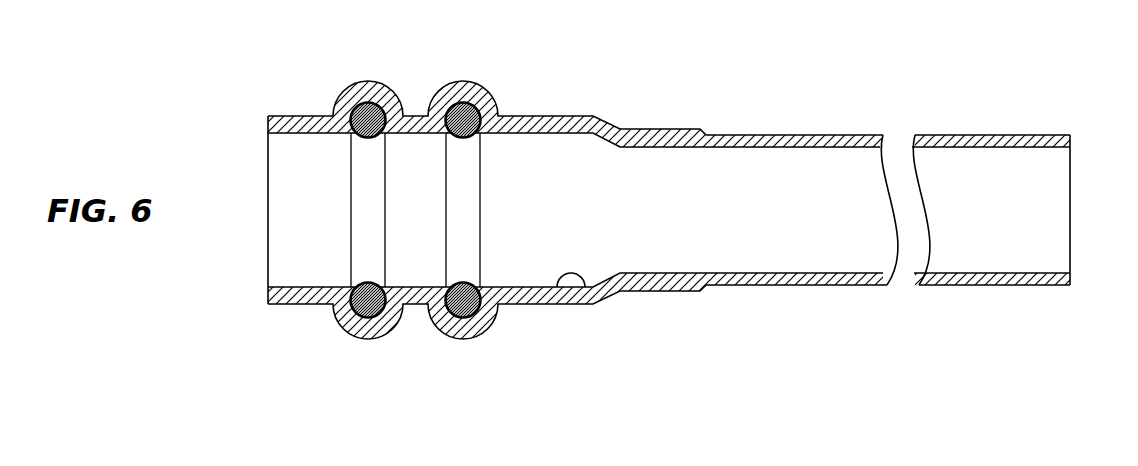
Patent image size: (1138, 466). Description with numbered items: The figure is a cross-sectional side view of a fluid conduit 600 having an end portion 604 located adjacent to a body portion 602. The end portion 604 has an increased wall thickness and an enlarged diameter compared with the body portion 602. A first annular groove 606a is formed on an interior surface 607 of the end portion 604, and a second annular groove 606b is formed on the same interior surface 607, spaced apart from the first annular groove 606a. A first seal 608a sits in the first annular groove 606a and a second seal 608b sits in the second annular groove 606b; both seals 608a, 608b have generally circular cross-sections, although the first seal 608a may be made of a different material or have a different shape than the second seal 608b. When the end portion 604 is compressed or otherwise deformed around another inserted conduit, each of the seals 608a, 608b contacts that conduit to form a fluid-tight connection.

The fluid conduit 600 is at (677, 199).
The body portion 602 is at (875, 310).
The end portion 604 is at (312, 333).
The first annular groove 606a is at (388, 305).
The second annular groove 606b is at (483, 305).
The interior surface 607 is at (585, 286).
The first seal 608a is at (368, 113).
The second seal 608b is at (463, 113).